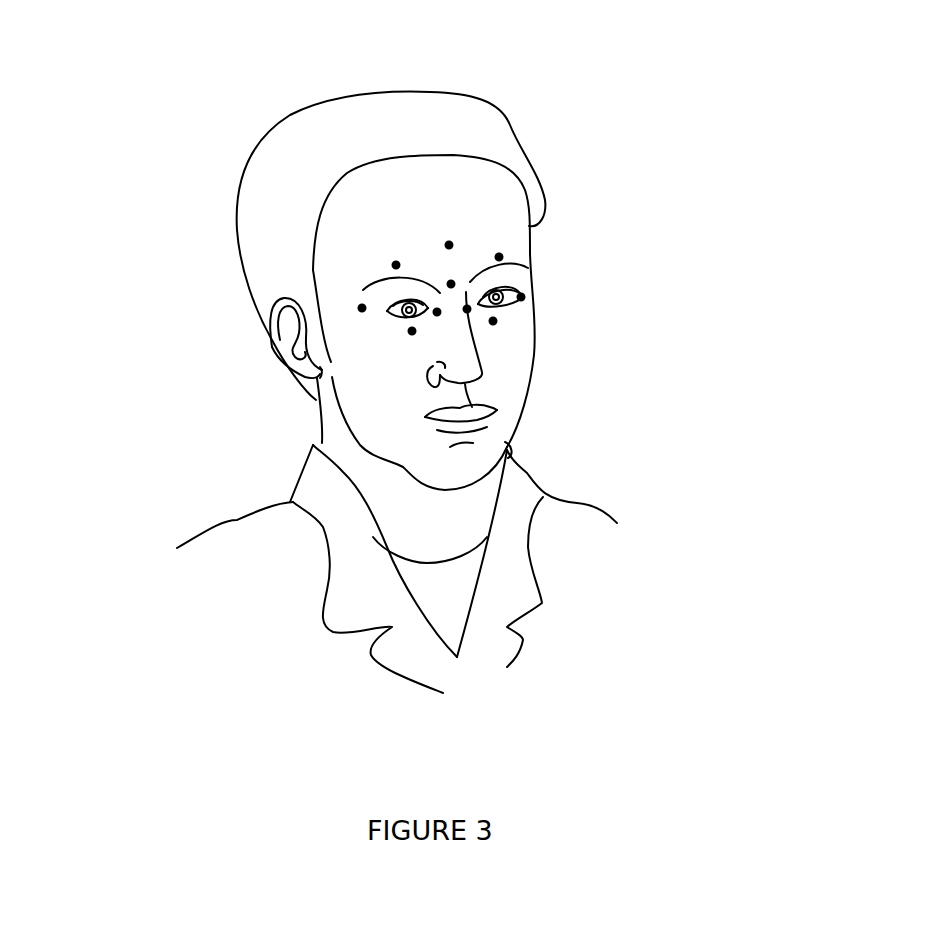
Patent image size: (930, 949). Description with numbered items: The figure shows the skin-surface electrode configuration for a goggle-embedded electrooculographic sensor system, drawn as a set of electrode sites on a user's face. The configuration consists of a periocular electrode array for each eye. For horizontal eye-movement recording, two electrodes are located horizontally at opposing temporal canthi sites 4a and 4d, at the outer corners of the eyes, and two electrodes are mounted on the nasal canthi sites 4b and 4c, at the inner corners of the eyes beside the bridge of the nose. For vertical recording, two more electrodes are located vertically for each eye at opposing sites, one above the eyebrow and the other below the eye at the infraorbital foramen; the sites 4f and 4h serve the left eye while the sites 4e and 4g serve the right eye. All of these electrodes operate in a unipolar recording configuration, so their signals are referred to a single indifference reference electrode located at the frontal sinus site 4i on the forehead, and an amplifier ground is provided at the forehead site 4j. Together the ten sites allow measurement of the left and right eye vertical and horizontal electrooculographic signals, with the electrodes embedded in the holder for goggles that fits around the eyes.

The temporal canthus electrode site 4a is at (362, 308).
The nasal canthus electrode site 4b is at (437, 312).
The nasal canthus electrode site 4c is at (467, 309).
The temporal canthus electrode site 4d is at (521, 297).
The right eye above-eyebrow electrode site 4e is at (396, 265).
The left eye vertical electrode site 4f is at (412, 331).
The right eye infraorbital foramen electrode site 4g is at (499, 257).
The left eye vertical electrode site 4h is at (493, 321).
The indifference reference electrode site 4i is at (451, 284).
The amplifier ground electrode site 4j is at (449, 245).